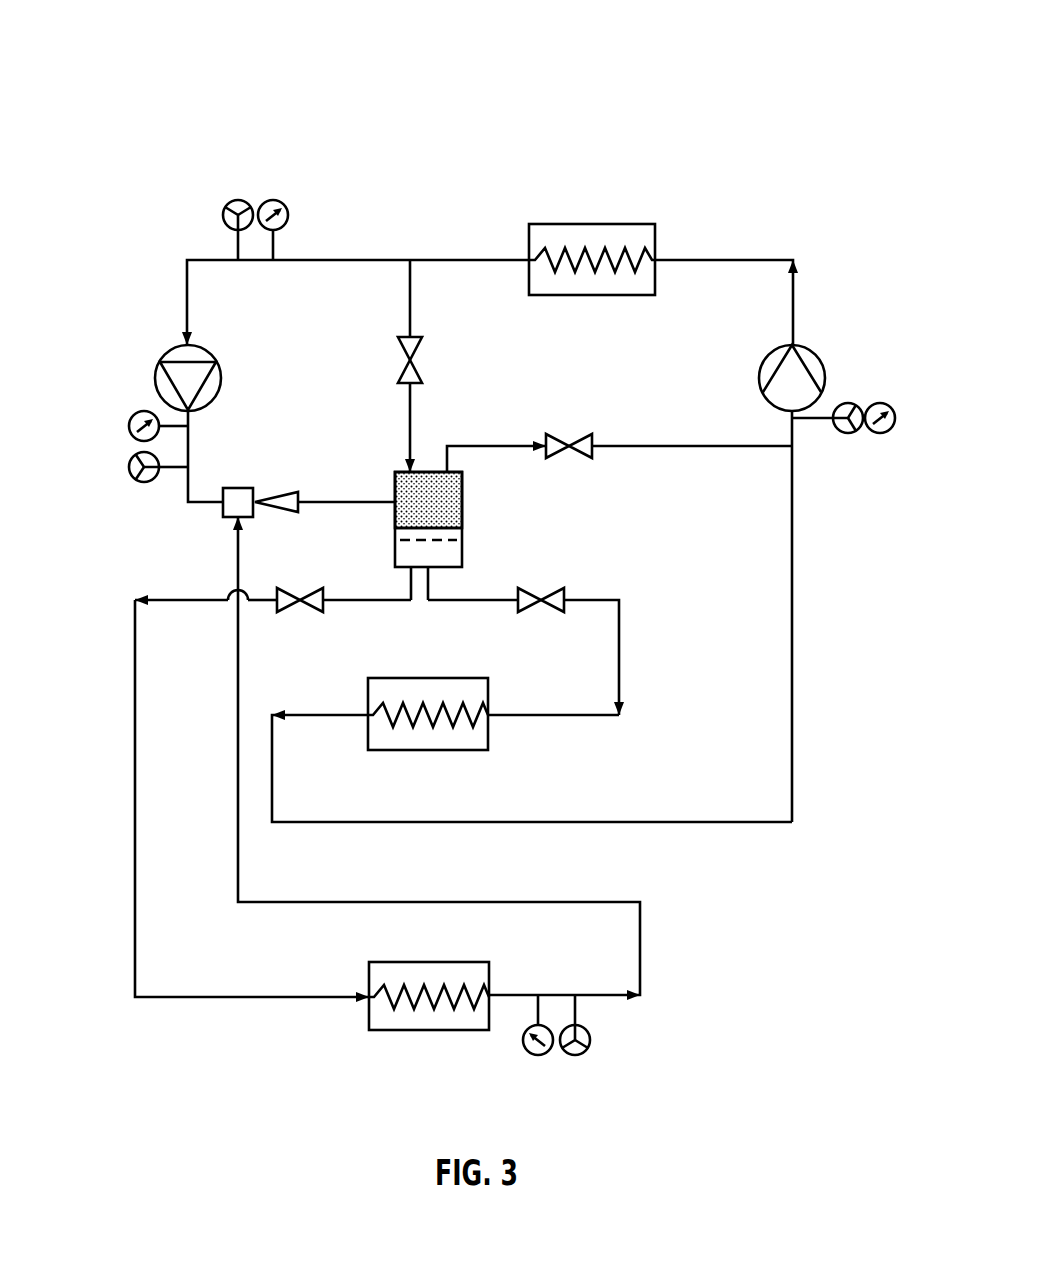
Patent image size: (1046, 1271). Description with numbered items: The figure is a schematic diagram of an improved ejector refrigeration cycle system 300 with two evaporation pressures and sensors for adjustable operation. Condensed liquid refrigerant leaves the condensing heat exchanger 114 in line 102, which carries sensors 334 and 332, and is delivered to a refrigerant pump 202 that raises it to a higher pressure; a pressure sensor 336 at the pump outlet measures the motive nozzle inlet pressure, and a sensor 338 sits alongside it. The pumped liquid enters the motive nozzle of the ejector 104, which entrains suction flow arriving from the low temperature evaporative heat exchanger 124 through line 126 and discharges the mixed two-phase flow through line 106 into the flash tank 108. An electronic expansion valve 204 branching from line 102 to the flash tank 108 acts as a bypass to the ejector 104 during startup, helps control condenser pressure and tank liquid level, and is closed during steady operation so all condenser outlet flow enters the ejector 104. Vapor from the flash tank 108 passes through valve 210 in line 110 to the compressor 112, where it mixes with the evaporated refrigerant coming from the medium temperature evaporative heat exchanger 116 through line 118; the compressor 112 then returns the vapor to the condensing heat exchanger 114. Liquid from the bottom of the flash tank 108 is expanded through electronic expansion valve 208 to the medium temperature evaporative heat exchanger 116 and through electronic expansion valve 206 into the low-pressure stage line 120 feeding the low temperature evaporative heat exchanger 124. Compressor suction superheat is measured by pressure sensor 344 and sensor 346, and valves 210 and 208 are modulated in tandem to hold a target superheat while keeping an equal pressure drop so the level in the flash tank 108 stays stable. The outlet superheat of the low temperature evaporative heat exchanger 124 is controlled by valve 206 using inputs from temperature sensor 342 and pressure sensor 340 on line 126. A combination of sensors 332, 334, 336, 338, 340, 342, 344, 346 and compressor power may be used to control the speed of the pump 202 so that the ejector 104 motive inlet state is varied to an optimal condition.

The ejector refrigeration cycle system 300 is at (815, 80).
The line 102 is at (370, 260).
The ejector 104 is at (235, 488).
The line 106 is at (345, 500).
The flash tank 108 is at (462, 495).
The line 110 is at (663, 446).
The compressor 112 is at (826, 372).
The condensing heat exchanger 114 is at (592, 224).
The medium temperature evaporative heat exchanger 116 is at (490, 722).
The line 118 is at (333, 713).
The line 120 is at (134, 845).
The low temperature evaporative heat exchanger 124 is at (430, 1032).
The line 126 is at (641, 950).
The refrigerant pump 202 is at (160, 352).
The electronic expansion valve 204 is at (415, 365).
The electronic expansion valve 206 is at (303, 610).
The electronic expansion valve 208 is at (545, 610).
The valve 210 is at (571, 456).
The sensor 332 is at (283, 204).
The sensor 334 is at (228, 204).
The pressure sensor 336 is at (128, 430).
The sensor 338 is at (128, 470).
The pressure sensor 340 is at (537, 1057).
The temperature sensor 342 is at (576, 1057).
The pressure sensor 344 is at (891, 407).
The sensor 346 is at (850, 432).